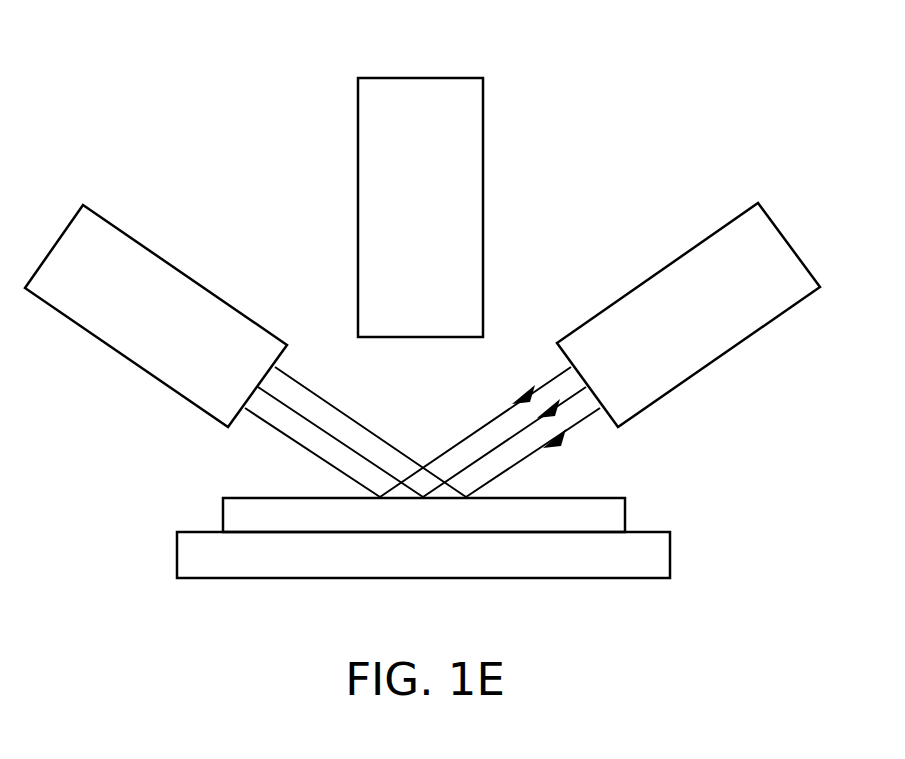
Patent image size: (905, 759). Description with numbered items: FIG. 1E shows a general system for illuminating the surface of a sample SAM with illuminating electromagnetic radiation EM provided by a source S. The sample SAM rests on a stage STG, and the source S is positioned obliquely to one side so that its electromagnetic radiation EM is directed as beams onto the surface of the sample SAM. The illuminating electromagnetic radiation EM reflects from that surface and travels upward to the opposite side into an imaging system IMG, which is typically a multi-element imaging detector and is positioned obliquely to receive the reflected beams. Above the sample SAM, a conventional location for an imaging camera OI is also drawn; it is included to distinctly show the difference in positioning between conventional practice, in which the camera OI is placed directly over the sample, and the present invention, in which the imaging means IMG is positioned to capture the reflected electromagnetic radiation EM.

The imaging camera OI is at (406, 223).
The imaging system IMG is at (127, 326).
The source S is at (680, 325).
The illuminating electromagnetic radiation EM is at (498, 393).
The sample SAM is at (393, 527).
The stage STG is at (396, 567).